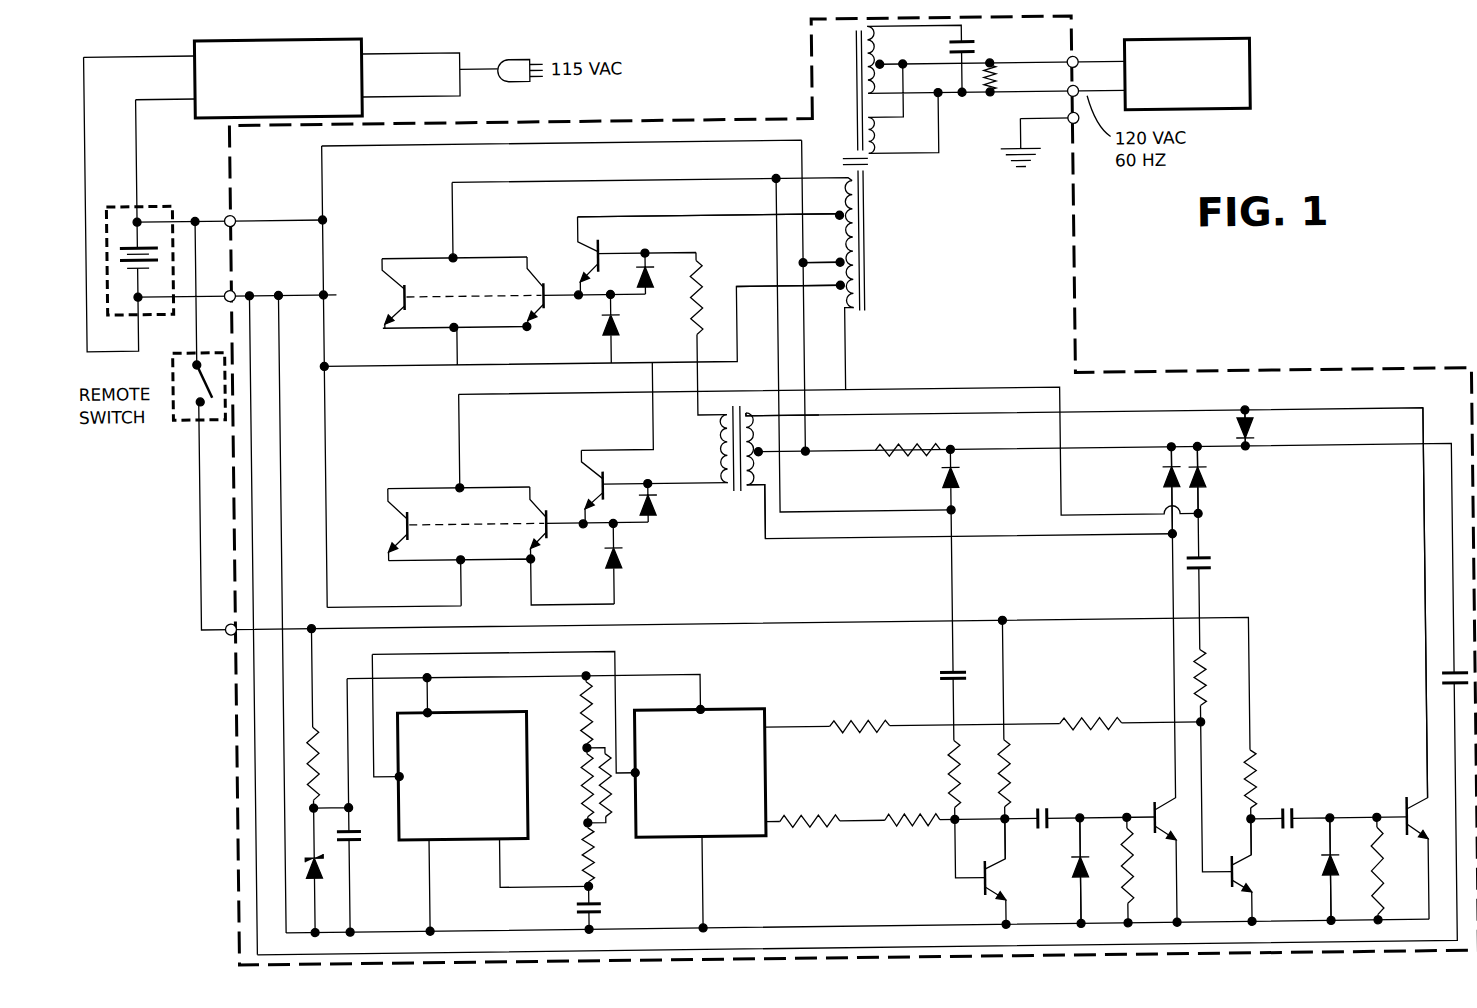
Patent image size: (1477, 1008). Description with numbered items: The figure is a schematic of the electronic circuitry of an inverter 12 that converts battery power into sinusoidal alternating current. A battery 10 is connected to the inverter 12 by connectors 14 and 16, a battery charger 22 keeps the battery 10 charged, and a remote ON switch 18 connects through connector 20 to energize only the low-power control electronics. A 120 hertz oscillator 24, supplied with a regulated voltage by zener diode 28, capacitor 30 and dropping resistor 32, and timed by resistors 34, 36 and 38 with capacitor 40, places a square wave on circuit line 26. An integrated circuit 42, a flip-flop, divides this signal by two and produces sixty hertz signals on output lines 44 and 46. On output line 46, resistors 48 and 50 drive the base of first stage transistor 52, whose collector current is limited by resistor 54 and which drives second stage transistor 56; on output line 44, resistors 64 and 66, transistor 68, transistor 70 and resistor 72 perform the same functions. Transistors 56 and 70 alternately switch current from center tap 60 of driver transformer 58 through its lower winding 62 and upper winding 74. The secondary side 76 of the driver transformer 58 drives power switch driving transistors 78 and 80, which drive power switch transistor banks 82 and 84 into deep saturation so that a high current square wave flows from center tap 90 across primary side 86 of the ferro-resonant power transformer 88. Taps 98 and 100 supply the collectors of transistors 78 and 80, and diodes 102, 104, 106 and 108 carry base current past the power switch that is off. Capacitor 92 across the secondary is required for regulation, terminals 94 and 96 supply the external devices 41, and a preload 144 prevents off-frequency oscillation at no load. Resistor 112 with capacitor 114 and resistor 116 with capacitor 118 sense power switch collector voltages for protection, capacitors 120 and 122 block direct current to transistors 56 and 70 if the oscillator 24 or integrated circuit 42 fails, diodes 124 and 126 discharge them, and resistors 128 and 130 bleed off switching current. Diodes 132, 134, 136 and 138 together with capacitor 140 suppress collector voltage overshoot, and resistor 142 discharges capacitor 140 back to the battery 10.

The battery 10 is at (176, 212).
The inverter 12 is at (817, 68).
The connector 14 is at (238, 212).
The connector 16 is at (231, 287).
The remote ON switch 18 is at (176, 414).
The connector 20 is at (224, 630).
The battery charger 22 is at (367, 82).
The 120 hertz oscillator 24 is at (500, 709).
The circuit line 26 is at (615, 650).
The zener diode 28 is at (318, 870).
The capacitor 30 is at (360, 840).
The dropping resistor 32 is at (318, 760).
The resistor 34 is at (578, 777).
The resistor 36 is at (584, 786).
The resistor 38 is at (586, 867).
The capacitor 40 is at (588, 900).
The external devices 41 is at (1255, 52).
The integrated circuit 42 is at (740, 709).
The output line 44 is at (786, 729).
The output line 46 is at (780, 826).
The resistor 48 is at (798, 818).
The resistor 50 is at (910, 818).
The first stage transistor 52 is at (975, 894).
The resistor 54 is at (1008, 768).
The second stage transistor 56 is at (1148, 812).
The driver transformer 58 is at (720, 492).
The center tap 60 is at (762, 455).
The lower winding 62 is at (752, 490).
The resistor 64 is at (836, 727).
The resistor 66 is at (1068, 726).
The transistor 68 is at (1240, 872).
The transistor 70 is at (1402, 812).
The resistor 72 is at (1253, 787).
The upper winding 74 is at (748, 413).
The secondary side 76 is at (716, 445).
The power switch driving transistor 78 is at (604, 470).
The power switch driving transistor 80 is at (602, 238).
The power switch transistor bank 82 is at (402, 521).
The power switch transistor bank 84 is at (402, 291).
The primary side 86 is at (846, 305).
The ferro-resonant power transformer 88 is at (881, 236).
The center tap 90 is at (841, 262).
The capacitor 92 is at (980, 50).
The terminal 94 is at (1084, 62).
The terminal 96 is at (1075, 93).
The tap 98 is at (841, 286).
The tap 100 is at (841, 216).
The diode 102 is at (618, 560).
The diode 104 is at (651, 510).
The diode 106 is at (618, 330).
The diode 108 is at (651, 283).
The resistor 112 is at (945, 762).
The capacitor 114 is at (944, 675).
The resistor 116 is at (1205, 683).
The capacitor 118 is at (1212, 572).
The capacitor 120 is at (1038, 806).
The capacitor 122 is at (1290, 818).
The diode 124 is at (1068, 875).
The diode 126 is at (1320, 876).
The resistor 128 is at (1124, 878).
The resistor 130 is at (1378, 862).
The diode 132 is at (958, 480).
The diode 134 is at (1165, 478).
The diode 136 is at (1208, 482).
The diode 138 is at (1258, 430).
The capacitor 140 is at (1442, 686).
The resistor 142 is at (905, 465).
The preload 144 is at (988, 102).